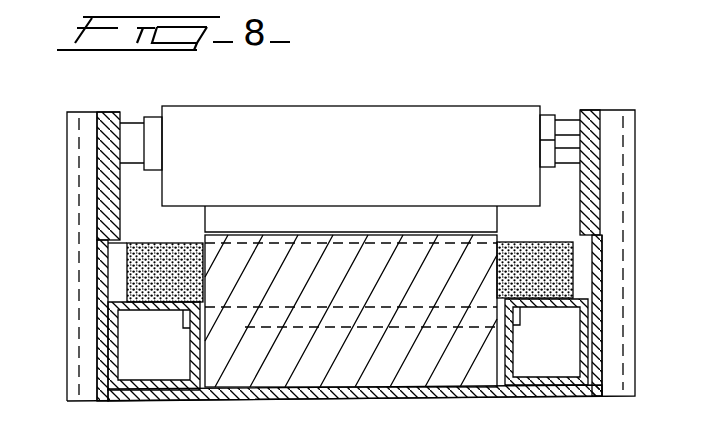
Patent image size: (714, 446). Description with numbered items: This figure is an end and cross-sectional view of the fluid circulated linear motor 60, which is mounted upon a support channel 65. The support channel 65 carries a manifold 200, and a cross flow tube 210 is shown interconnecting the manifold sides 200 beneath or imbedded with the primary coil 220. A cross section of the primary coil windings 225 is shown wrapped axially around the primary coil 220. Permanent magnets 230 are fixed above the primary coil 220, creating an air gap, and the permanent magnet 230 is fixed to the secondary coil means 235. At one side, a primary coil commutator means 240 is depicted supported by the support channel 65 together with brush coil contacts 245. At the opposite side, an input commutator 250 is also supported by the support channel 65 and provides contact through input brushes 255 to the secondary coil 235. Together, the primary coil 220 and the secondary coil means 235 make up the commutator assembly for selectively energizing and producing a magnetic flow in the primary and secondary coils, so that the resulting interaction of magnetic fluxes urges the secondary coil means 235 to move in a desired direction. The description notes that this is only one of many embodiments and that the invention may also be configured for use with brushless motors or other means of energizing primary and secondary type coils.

The fluid circulated linear motor 60 is at (220, 85).
The support channel 65 is at (103, 312).
The manifold 200 is at (170, 352).
The cross flow tube 210 is at (248, 318).
The primary coil 220 is at (323, 285).
The primary coil windings 225 is at (177, 247).
The permanent magnet 230 is at (368, 220).
The secondary coil means 235 is at (312, 163).
The primary coil commutator means 240 is at (117, 112).
The brush coil contacts 245 is at (130, 122).
The input commutator 250 is at (583, 110).
The input brushes 255 is at (548, 150).